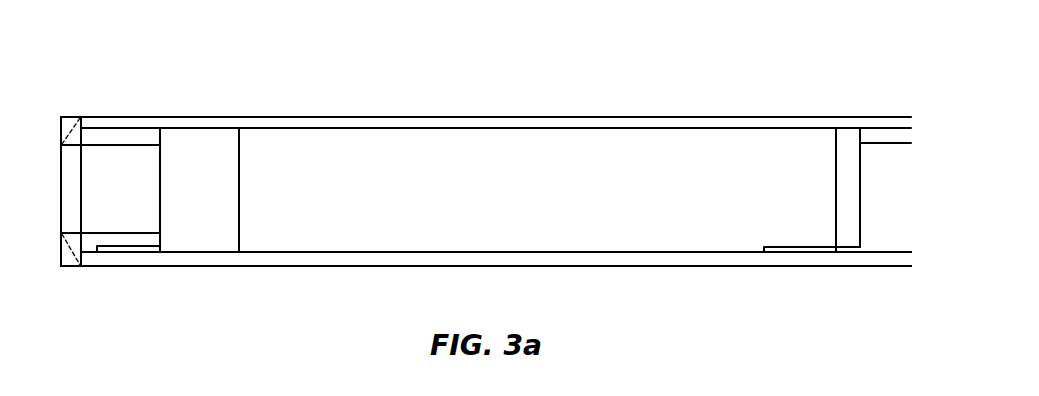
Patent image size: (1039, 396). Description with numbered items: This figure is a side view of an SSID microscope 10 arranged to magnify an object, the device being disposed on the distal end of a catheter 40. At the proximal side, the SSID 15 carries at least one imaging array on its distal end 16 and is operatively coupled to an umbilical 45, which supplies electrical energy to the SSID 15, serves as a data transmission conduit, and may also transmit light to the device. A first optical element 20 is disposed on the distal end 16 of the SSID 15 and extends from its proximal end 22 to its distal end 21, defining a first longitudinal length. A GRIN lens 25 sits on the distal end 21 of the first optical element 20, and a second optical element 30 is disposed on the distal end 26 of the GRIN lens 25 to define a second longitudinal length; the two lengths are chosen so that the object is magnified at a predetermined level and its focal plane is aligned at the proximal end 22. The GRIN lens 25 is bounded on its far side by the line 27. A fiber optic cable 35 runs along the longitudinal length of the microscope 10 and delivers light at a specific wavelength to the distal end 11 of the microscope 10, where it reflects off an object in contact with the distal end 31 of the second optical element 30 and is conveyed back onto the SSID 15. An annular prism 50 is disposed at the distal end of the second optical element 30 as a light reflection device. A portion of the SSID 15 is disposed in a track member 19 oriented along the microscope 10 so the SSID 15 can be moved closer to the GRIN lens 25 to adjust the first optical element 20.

The microscope 10 is at (612, 88).
The distal end of the microscope 11 is at (91, 93).
The SSID 15 is at (847, 227).
The distal end of the SSID 16 is at (843, 153).
The track member 19 is at (115, 252).
The first optical element 20 is at (477, 162).
The distal end of the first optical element 21 is at (248, 252).
The proximal end of the first optical element 22 is at (835, 137).
The GRIN lens 25 is at (183, 155).
The distal end of the GRIN lens 26 is at (167, 136).
The block right wall 27 is at (247, 136).
The second optical element 30 is at (128, 208).
The distal end of the second optical element 31 is at (60, 192).
The fiber optic cable 35 is at (373, 117).
The catheter 40 is at (892, 265).
The umbilical 45 is at (888, 137).
The annular prism 50 is at (68, 117).